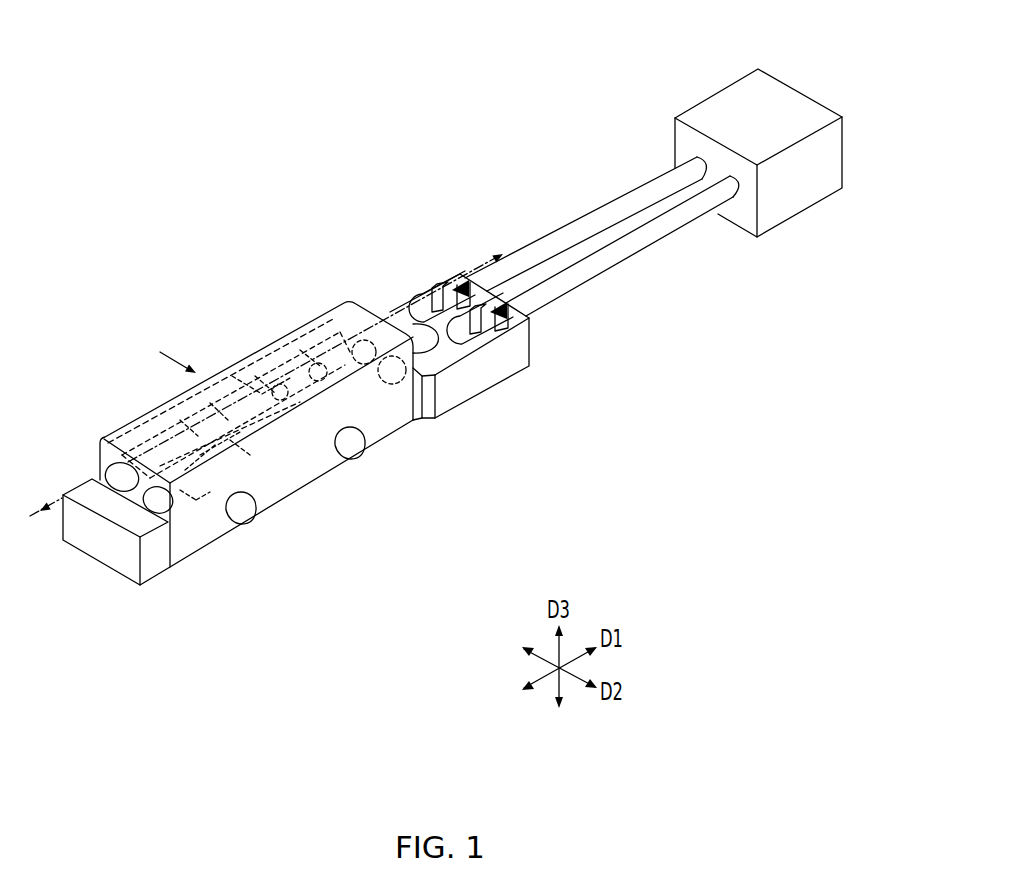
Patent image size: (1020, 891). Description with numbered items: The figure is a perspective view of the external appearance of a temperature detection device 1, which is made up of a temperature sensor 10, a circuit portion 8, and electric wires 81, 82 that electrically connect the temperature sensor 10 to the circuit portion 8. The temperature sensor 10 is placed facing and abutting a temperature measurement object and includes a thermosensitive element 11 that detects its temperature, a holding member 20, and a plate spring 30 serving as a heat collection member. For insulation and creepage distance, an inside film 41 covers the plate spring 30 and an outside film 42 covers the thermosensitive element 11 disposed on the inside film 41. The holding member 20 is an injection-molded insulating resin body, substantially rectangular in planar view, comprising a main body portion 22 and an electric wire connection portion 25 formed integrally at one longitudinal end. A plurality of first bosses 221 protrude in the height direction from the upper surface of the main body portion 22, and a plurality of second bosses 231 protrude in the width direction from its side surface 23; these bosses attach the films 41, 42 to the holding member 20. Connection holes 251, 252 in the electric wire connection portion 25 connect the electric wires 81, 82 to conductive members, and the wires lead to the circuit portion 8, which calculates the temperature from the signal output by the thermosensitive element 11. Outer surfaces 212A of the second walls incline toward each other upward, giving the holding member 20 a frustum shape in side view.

The temperature detection device 1 is at (553, 78).
The circuit portion 8 is at (723, 89).
The temperature sensor 10 is at (243, 224).
The thermosensitive element 11 is at (226, 362).
The holding member 20 is at (395, 460).
The main body portion 22 is at (166, 570).
The side surface 23 is at (303, 503).
The electric wire connection portion 25 is at (490, 386).
The plate spring 30 is at (258, 340).
The inside film 41 is at (150, 455).
The outside film 42 is at (327, 307).
The electric wire 81 is at (647, 252).
The electric wire 82 is at (605, 205).
The outer surface 212A is at (186, 485).
The first boss 221 is at (140, 522).
The second boss 231 is at (248, 527).
The connection hole 251 is at (483, 333).
The connection hole 252 is at (424, 303).